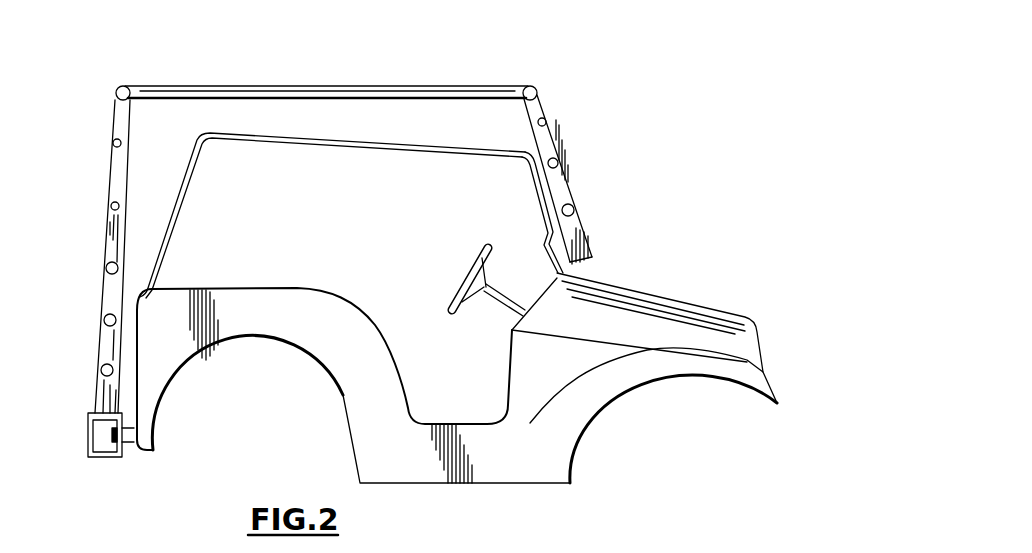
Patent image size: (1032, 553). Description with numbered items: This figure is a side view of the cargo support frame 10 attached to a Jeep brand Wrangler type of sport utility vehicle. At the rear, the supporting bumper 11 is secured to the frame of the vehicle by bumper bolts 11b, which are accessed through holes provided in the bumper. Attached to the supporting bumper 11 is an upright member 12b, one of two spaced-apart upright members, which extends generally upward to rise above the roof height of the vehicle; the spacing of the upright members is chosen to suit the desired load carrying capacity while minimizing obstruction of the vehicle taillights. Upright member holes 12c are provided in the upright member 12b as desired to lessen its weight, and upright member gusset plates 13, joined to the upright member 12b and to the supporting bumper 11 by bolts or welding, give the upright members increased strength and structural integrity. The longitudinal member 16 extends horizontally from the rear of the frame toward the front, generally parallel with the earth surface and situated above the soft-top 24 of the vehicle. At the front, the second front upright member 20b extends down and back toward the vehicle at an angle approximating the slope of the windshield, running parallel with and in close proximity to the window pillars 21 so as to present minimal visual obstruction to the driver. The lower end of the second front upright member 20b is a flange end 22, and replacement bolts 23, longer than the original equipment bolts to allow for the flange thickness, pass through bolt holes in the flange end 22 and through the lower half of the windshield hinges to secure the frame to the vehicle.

The cargo support frame 10 is at (80, 90).
The longitudinal member 16 is at (357, 87).
The upright member holes 12c is at (113, 212).
The upright member 12b is at (100, 372).
The upright member gusset plates 13 is at (98, 408).
The supporting bumper 11 is at (100, 458).
The bumper bolts 11b is at (108, 452).
The second front upright member 20b is at (568, 177).
The window pillars 21 is at (538, 212).
The flange end 22 is at (594, 292).
The replacement bolts 23 is at (568, 250).
The soft-top 24 is at (235, 140).